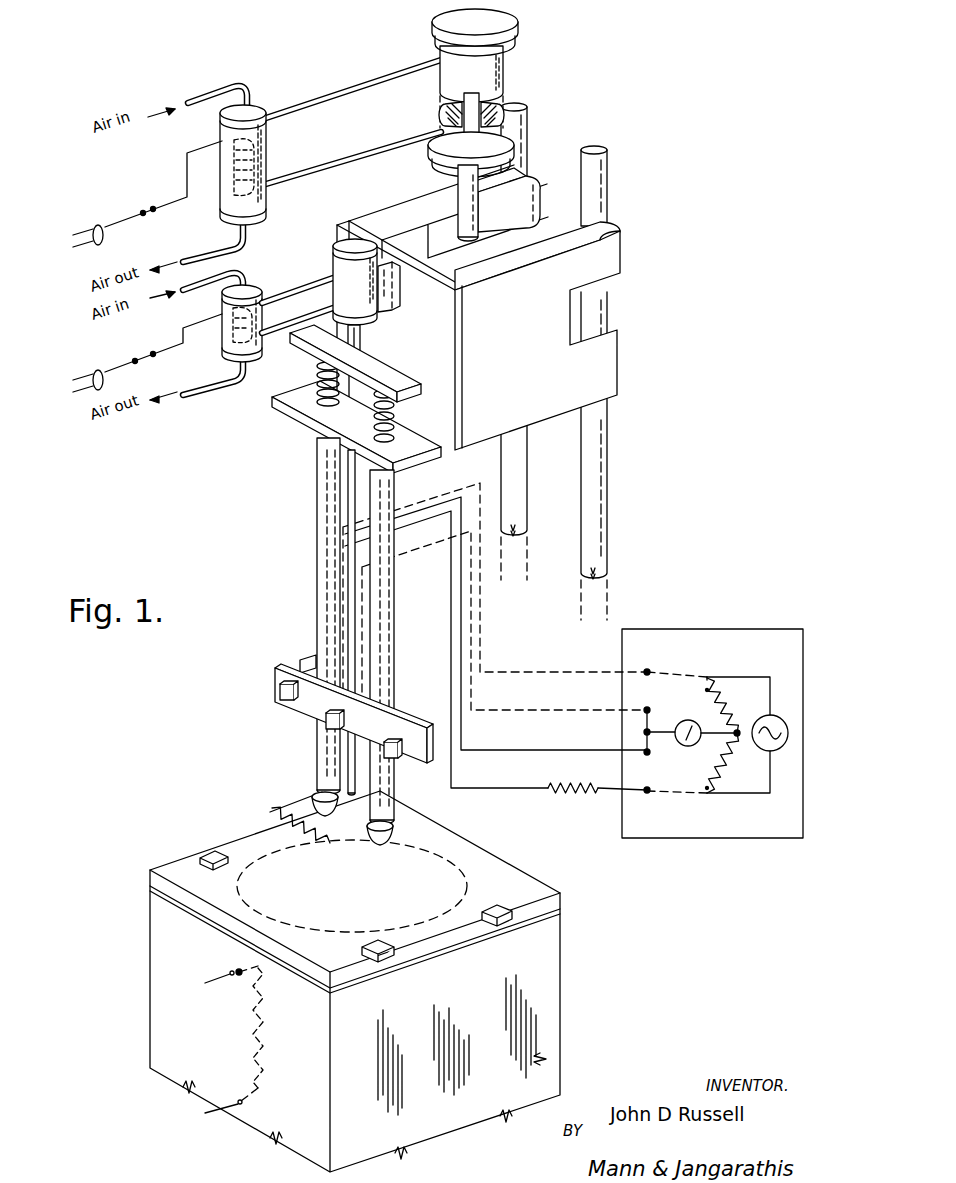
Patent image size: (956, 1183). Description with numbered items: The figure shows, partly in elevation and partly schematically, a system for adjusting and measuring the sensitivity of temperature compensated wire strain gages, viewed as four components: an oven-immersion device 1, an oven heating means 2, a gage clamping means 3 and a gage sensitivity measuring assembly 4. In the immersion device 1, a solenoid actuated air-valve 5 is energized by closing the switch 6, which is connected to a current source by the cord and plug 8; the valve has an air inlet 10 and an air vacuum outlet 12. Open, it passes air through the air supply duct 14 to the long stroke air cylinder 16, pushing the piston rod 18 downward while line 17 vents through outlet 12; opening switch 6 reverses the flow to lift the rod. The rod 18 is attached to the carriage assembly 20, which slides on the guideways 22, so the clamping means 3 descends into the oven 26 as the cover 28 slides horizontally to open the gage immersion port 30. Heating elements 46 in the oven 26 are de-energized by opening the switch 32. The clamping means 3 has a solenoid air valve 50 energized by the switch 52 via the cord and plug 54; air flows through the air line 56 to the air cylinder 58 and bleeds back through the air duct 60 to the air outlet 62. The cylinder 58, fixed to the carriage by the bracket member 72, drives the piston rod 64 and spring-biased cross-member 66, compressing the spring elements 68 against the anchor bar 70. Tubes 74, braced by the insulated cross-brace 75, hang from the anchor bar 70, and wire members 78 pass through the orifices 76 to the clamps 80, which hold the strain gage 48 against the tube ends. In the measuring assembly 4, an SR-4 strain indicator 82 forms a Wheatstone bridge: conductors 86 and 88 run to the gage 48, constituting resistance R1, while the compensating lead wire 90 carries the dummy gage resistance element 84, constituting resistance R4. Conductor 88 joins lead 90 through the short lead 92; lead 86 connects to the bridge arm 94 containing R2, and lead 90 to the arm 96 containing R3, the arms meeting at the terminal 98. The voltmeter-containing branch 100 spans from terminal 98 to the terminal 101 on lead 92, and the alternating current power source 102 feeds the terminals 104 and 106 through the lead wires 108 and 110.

The oven-immersion device 1 is at (437, 127).
The oven heating means 2 is at (354, 981).
The gage clamping means 3 is at (386, 354).
The gage sensitivity measuring assembly 4 is at (712, 703).
The solenoid actuated air-valve 5 is at (233, 113).
The switch 6 is at (143, 210).
The cord and plug 8 is at (100, 221).
The air inlet 10 is at (208, 92).
The air vacuum outlet 12 is at (213, 244).
The air supply duct 14 is at (344, 88).
The long stroke air cylinder 16 is at (504, 62).
The line 17 is at (350, 162).
The piston rod 18 is at (457, 177).
The carriage assembly 20 is at (614, 251).
The guideways 22 is at (581, 468).
The oven 26 is at (547, 978).
The cover 28 is at (517, 886).
The gage immersion port 30 is at (440, 836).
The switch 32 is at (233, 976).
The heating element 46 is at (250, 1036).
The strain gage 48 is at (276, 830).
The solenoid air valve 50 is at (233, 347).
The switch 52 is at (138, 356).
The cord and plug 54 is at (94, 367).
The air line 56 is at (278, 296).
The air cylinder 58 is at (362, 312).
The air duct 60 is at (278, 327).
The air outlet 62 is at (204, 392).
The piston rod 64 is at (318, 341).
The spring-biased cross-member 66 is at (313, 353).
The spring elements 68 is at (338, 434).
The anchor bar 70 is at (278, 412).
The bracket member 72 is at (394, 292).
The tubes 74 is at (375, 484).
The insulated cross-brace 75 is at (413, 717).
The orifices 76 is at (376, 413).
The wire members 78 is at (316, 795).
The expanded pads or clamps 80 is at (378, 836).
The SR-4 strain indicator 82 is at (645, 666).
The dummy gage resistance element 84 is at (496, 671).
The conductor 86 is at (413, 505).
The conductor 88 is at (413, 555).
The compensating lead wire 90 is at (523, 788).
The short lead 92 is at (649, 712).
The bridge arm 94 is at (705, 690).
The arm 96 is at (705, 788).
The terminal 98 is at (747, 741).
The voltmeter-containing branch 100 is at (678, 745).
The terminal 101 is at (645, 732).
The alternating current power source 102 is at (787, 733).
The terminal 104 is at (705, 687).
The terminal 106 is at (702, 793).
The lead wire 108 is at (738, 676).
The lead wire 110 is at (745, 794).
The resistance R1 is at (301, 837).
The resistance R2 is at (729, 705).
The resistance R3 is at (734, 763).
The resistance R4 is at (557, 790).